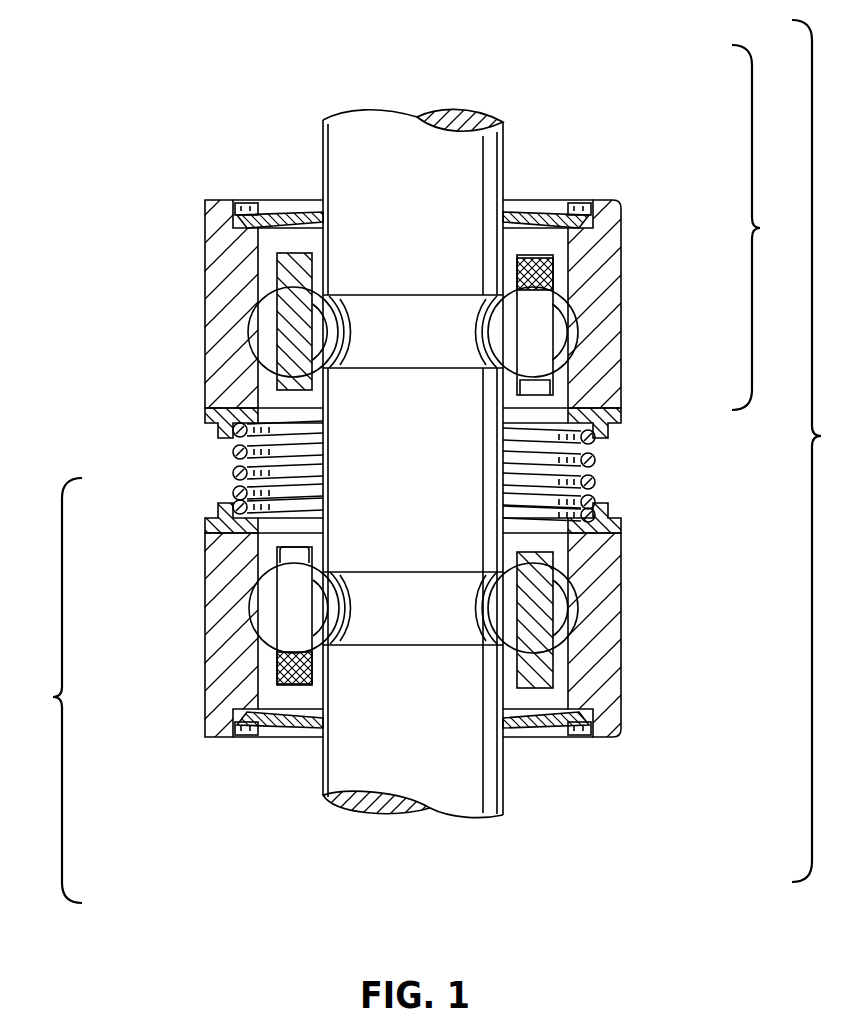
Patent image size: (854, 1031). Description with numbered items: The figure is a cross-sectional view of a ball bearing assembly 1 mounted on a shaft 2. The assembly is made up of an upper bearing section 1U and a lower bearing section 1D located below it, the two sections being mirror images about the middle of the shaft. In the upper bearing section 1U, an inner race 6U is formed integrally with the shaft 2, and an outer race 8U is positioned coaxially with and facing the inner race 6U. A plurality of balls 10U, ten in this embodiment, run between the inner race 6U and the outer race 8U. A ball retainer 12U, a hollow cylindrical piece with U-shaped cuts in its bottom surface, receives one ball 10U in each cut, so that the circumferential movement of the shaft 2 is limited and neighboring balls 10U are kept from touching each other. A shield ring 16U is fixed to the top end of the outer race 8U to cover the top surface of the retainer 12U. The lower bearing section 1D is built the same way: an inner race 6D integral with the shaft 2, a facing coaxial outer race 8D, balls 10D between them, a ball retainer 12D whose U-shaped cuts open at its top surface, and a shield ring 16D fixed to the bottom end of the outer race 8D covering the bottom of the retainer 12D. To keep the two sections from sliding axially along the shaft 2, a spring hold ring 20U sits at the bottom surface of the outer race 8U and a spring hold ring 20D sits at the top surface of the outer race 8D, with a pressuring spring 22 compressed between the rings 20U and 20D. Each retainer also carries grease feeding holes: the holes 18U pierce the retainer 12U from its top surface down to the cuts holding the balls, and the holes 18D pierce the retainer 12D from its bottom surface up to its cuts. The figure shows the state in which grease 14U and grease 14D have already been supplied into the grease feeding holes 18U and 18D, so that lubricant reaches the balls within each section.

The ball bearing assembly 1 is at (846, 460).
The upper bearing section 1U is at (797, 250).
The lower bearing section 1D is at (46, 710).
The shaft 2 is at (421, 480).
The inner race 6U is at (415, 323).
The inner race 6D is at (420, 632).
The outer race 8U is at (595, 367).
The outer race 8D is at (228, 567).
The balls 10U is at (542, 330).
The balls 10D is at (273, 615).
The ball retainer 12U is at (278, 280).
The ball retainer 12D is at (538, 608).
The grease 14U is at (545, 292).
The grease 14D is at (285, 667).
The shield ring 16U is at (548, 218).
The shield ring 16D is at (278, 730).
The grease feeding holes 18U is at (549, 259).
The grease feeding holes 18D is at (280, 687).
The spring hold ring 20U is at (604, 425).
The spring hold ring 20D is at (605, 528).
The pressuring spring 22 is at (598, 466).